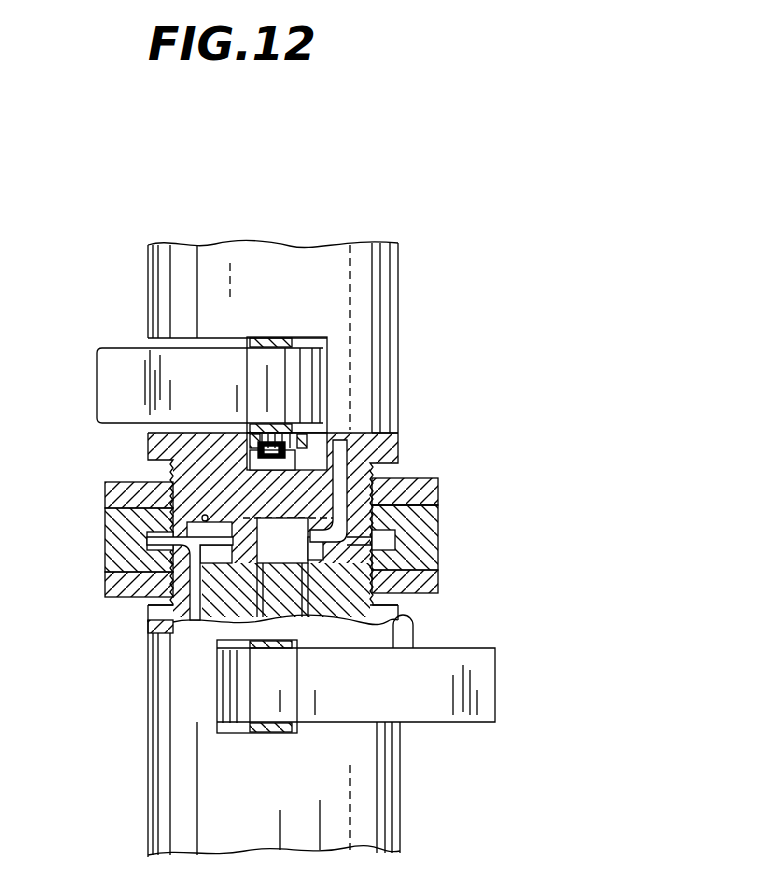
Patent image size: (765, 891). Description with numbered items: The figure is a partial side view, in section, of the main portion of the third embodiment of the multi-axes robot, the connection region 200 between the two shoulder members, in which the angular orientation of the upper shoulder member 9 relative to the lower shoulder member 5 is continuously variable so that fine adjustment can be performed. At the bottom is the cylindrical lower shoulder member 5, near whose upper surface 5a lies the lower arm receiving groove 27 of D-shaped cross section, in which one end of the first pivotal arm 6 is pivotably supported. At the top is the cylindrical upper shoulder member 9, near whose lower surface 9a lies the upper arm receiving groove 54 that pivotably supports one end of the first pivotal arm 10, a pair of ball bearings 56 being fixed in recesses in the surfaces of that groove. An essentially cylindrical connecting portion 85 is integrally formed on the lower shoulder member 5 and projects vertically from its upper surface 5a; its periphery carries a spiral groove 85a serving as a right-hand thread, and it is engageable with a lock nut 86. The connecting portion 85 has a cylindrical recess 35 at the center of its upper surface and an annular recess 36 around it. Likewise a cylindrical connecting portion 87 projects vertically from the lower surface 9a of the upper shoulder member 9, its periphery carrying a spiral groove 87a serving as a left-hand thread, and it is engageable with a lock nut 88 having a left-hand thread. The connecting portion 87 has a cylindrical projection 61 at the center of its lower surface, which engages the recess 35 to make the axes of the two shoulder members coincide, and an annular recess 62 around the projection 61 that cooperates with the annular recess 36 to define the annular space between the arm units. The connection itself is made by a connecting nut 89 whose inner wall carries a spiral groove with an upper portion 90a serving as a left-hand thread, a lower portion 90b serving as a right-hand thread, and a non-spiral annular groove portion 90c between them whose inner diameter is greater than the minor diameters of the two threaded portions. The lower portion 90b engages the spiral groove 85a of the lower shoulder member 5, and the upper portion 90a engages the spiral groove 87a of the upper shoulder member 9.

The pipe joint assembly 200 is at (494, 252).
The lower shoulder member 5 is at (150, 735).
The upper surface of the lower shoulder member 5a is at (395, 626).
The first pivotal arm 6 is at (430, 723).
The upper shoulder member 9 is at (398, 301).
The lower surface of the upper shoulder member 9a is at (408, 452).
The first pivotal arm 10 is at (128, 356).
The lower arm receiving groove 27 is at (223, 672).
The cylindrical recess 35 is at (280, 590).
The upper annular recess 36 is at (337, 582).
The upper arm receiving groove 54 is at (318, 362).
The ball bearings 56 is at (318, 450).
The cylindrical projection 61 is at (215, 622).
The annular recess 62 is at (207, 515).
The connecting portion 85 is at (168, 617).
The spiral groove 85a is at (427, 597).
The lock nut 86 is at (437, 578).
The connecting portion 87 is at (160, 462).
The spiral groove 87a is at (420, 456).
The lock nut 88 is at (437, 478).
The connecting nut 89 is at (440, 523).
The upper portion of the spiral groove 90a is at (440, 505).
The lower portion of the spiral groove 90b is at (440, 555).
The non-spiral annular groove portion 90c is at (147, 540).